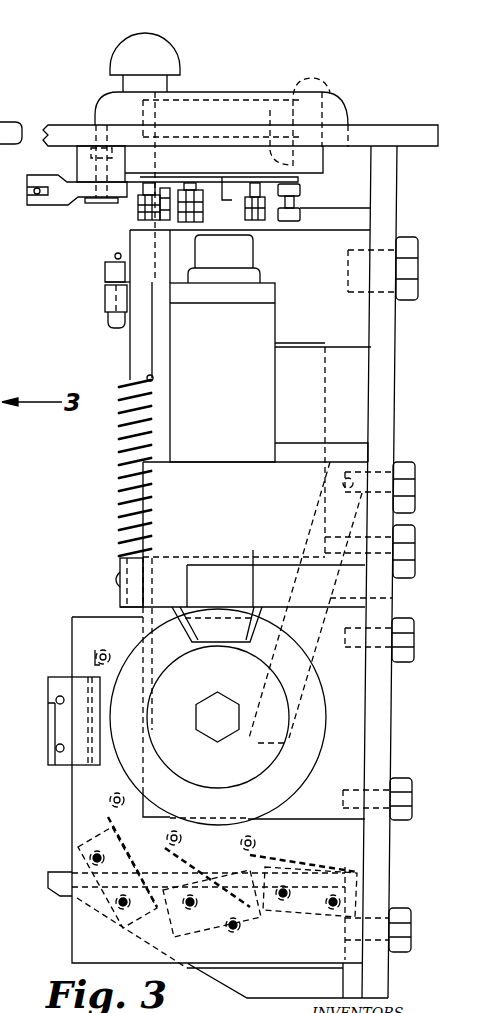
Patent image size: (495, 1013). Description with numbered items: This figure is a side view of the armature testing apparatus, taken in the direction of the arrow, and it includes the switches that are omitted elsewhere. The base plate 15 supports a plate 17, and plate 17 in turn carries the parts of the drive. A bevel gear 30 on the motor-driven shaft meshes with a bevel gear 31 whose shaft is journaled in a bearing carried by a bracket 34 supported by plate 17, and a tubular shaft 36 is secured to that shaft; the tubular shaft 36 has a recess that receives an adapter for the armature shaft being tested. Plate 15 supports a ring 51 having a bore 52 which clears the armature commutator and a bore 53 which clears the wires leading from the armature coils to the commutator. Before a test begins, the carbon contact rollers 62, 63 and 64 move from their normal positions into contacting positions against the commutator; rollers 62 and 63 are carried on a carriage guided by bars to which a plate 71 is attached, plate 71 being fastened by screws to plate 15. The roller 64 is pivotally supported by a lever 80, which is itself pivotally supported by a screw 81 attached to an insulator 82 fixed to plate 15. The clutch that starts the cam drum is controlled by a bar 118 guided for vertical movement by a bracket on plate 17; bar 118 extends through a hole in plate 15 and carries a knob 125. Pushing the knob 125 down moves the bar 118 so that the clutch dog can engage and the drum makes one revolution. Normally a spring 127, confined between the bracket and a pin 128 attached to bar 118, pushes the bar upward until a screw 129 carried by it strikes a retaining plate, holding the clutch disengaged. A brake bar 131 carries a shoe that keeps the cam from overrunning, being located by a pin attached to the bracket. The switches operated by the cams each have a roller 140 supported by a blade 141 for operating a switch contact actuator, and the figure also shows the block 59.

The plate 15 is at (429, 128).
The plate 17 is at (395, 344).
The bevel gear 30 is at (323, 748).
The bevel gear 31 is at (252, 608).
The bracket 34 is at (340, 446).
The tubular shaft 36 is at (276, 332).
The ring 51 is at (345, 110).
The bore 52 is at (292, 98).
The bore 53 is at (62, 849).
The block 59 is at (57, 786).
The carbon contact roller 62 is at (243, 206).
The carbon contact roller 63 is at (202, 204).
The carbon contact roller 64 is at (138, 208).
The plate 71 is at (300, 182).
The lever 80 is at (58, 201).
The screw 81 is at (100, 199).
The insulator 82 is at (77, 160).
The bar 118 is at (141, 360).
The knob 125 is at (180, 58).
The spring 127 is at (160, 434).
The pin 128 is at (160, 377).
The screw 129 is at (110, 323).
The bar 131 is at (380, 605).
The roller 140 is at (120, 643).
The blade 141 is at (95, 656).